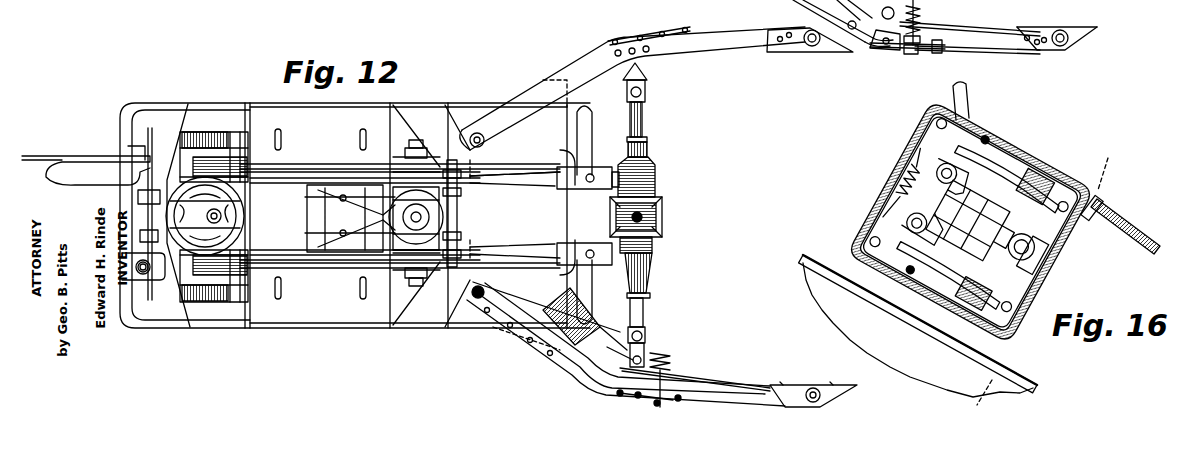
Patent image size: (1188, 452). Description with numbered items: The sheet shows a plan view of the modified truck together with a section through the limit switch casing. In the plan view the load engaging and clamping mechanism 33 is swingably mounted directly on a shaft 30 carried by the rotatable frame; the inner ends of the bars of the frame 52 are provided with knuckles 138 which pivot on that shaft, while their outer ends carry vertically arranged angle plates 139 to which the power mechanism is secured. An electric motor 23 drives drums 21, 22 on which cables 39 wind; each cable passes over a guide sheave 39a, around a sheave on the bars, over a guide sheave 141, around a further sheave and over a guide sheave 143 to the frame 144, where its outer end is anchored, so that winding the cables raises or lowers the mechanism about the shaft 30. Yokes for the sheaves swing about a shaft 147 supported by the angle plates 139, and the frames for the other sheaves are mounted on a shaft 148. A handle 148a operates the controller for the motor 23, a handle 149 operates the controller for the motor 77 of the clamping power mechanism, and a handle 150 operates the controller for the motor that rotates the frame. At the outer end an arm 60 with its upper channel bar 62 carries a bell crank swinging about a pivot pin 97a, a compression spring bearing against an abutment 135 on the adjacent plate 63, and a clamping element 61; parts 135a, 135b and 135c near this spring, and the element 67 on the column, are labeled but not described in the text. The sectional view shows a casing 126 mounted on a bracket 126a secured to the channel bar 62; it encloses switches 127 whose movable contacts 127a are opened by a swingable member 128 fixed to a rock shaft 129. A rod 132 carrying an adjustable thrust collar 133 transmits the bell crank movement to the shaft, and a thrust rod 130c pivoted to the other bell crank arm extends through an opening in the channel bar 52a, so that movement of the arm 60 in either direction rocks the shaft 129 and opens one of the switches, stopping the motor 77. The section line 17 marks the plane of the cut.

In FIG. 12, the drum 22 is at (247, 128).
In FIG. 12, the drum 21 is at (245, 283).
In FIG. 12, the electric motor 23 is at (240, 218).
In FIG. 12, the handle 149 is at (170, 208).
In FIG. 12, the handle 150 is at (152, 285).
In FIG. 12, the handle 148a is at (133, 190).
In FIG. 12, the cables 39 is at (306, 169).
In FIG. 12, the shaft 147 is at (305, 250).
In FIG. 12, the guide sheave 39a is at (404, 170).
In FIG. 12, the knuckles 138 is at (422, 158).
In FIG. 12, the guide sheave 143 is at (393, 254).
In FIG. 12, the shaft 30 is at (468, 222).
In FIG. 12, the guide sheave 141 is at (470, 200).
In FIG. 12, the frame 52 is at (525, 216).
In FIG. 12, the shaft 148 is at (597, 212).
In FIG. 12, the channel bar 52a is at (597, 168).
In FIG. 12, the frame 144 is at (568, 167).
In FIG. 12, the load engaging and clamping mechanism 33 is at (566, 44).
In FIG. 12, the motor 77 is at (655, 167).
In FIG. 12, the gear box 67 is at (654, 182).
In FIG. 12, the angle plates 139 is at (622, 250).
In FIG. 12, the pivot pin 97a is at (860, 40).
In FIG. 12, the spring bolt 135c is at (926, 5).
In FIG. 12, the rod 135a is at (910, 54).
In FIG. 12, the nut 135b is at (913, 55).
In FIG. 12, the plate 63 is at (937, 53).
In FIG. 12, the upper channel bar 62 is at (958, 28).
In FIG. 12, the arm 60 is at (972, 52).
In FIG. 12, the abutment 135 is at (1018, 27).
In FIG. 12, the clamping elements 61 is at (1046, 27).
In FIG. 16, the switch mechanism 127 is at (924, 154).
In FIG. 16, the movable contacts 127a is at (1017, 149).
In FIG. 16, the swingable member 128 is at (1030, 277).
In FIG. 16, the rock shaft 129 is at (1040, 246).
In FIG. 16, the casing 126 is at (893, 180).
In FIG. 16, the bracket 126a is at (836, 263).
In FIG. 16, the thrust rod 130c is at (967, 103).
In FIG. 16, the adjustable thrust collar 133 is at (1102, 203).
In FIG. 16, the rod 132 is at (1130, 230).
In FIG. 16, the section line 17 is at (1110, 157).